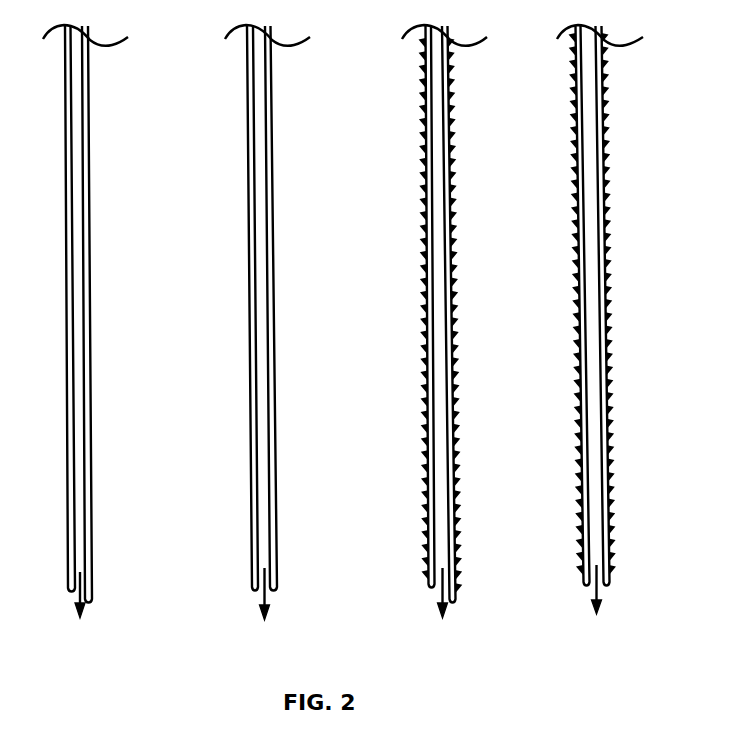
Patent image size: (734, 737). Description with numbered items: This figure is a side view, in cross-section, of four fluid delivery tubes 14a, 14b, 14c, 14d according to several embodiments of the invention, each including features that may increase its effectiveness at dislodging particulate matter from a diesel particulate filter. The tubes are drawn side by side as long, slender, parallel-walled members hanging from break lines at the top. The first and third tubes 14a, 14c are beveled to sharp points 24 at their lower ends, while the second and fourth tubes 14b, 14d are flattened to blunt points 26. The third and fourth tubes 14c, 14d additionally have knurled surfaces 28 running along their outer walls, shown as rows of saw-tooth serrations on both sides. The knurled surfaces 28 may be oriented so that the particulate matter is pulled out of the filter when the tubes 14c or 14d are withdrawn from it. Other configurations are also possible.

The fluid delivery tube 14a is at (82, 237).
The fluid delivery tube 14b is at (265, 237).
The fluid delivery tube 14c is at (447, 236).
The fluid delivery tube 14d is at (607, 235).
The sharp point 24 is at (72, 591).
The blunt point 26 is at (253, 590).
The knurled surface 28 is at (454, 88).